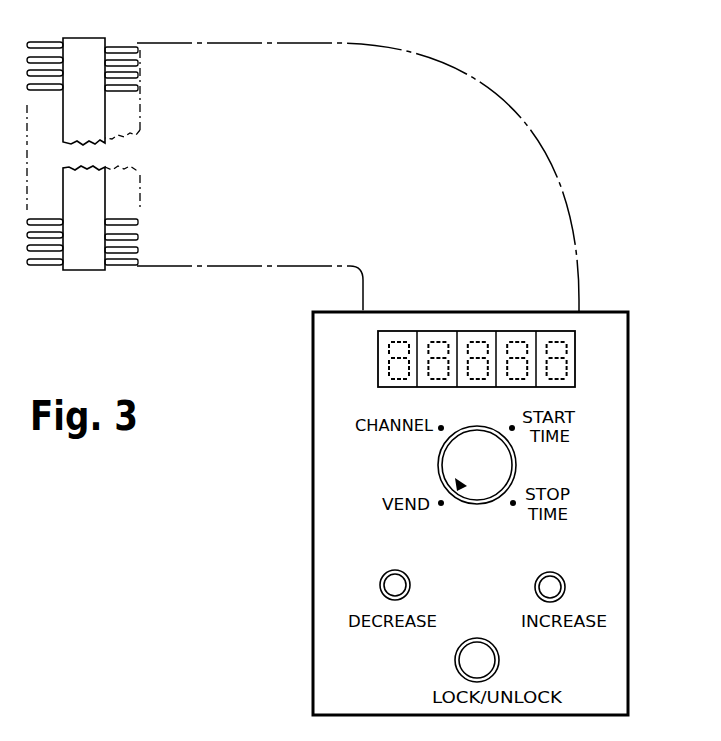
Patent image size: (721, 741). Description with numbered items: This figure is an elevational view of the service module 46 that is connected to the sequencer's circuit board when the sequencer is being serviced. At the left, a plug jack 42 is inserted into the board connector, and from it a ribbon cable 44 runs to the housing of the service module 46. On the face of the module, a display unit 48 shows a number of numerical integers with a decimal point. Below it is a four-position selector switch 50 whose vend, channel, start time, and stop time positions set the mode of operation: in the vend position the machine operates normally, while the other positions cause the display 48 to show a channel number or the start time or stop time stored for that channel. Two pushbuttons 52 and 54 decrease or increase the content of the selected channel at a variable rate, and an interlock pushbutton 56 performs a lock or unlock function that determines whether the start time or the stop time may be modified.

The plug jack 42 is at (87, 48).
The ribbon cable 44 is at (357, 60).
The service module 46 is at (629, 358).
The display unit 48 is at (372, 355).
The selector switch 50 is at (478, 492).
The pushbutton 52 is at (407, 578).
The second pushbutton 54 is at (564, 581).
The interlock pushbutton 56 is at (497, 649).